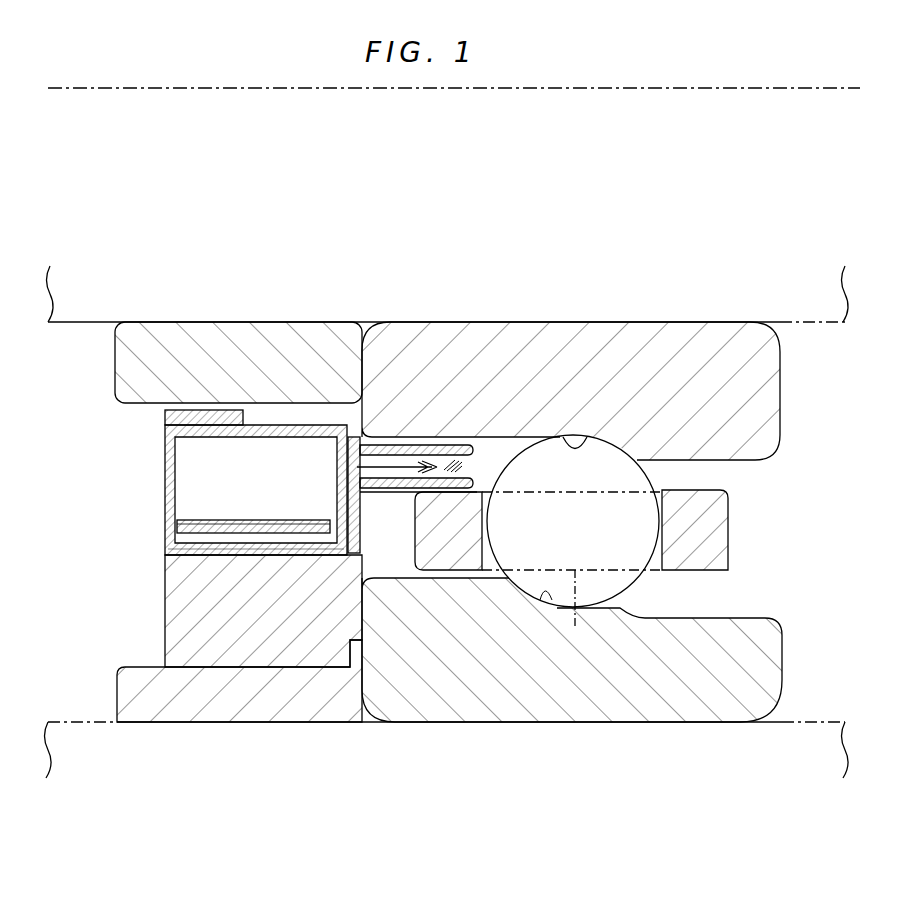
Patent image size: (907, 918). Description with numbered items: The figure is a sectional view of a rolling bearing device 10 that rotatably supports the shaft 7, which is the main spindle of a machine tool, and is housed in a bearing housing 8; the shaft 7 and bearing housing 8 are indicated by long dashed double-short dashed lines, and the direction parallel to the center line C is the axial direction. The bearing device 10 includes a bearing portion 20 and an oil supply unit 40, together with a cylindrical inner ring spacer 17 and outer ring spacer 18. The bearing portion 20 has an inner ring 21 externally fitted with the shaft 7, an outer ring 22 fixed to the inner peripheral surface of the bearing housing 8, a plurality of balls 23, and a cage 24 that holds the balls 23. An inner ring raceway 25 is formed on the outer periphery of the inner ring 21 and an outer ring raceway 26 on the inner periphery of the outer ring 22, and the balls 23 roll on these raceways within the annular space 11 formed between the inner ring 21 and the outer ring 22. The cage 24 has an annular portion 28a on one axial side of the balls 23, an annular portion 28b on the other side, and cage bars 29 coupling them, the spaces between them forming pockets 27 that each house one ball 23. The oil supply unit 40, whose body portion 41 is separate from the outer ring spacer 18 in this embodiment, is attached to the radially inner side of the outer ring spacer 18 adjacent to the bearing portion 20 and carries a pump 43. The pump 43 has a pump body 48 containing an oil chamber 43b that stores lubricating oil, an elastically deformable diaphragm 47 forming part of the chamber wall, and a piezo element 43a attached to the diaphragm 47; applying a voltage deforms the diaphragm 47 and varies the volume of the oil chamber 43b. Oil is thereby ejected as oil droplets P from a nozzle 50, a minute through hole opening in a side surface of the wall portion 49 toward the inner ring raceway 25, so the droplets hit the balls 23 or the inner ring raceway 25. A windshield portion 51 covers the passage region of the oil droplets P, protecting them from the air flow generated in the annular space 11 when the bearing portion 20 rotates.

The center line C is at (135, 92).
The shaft 7 is at (77, 324).
The bearing housing 8 is at (77, 721).
The rolling bearing device 10 is at (631, 547).
The annular space 11 is at (402, 565).
The inner ring spacer 17 is at (163, 340).
The outer ring spacer 18 is at (163, 702).
The bearing portion 20 is at (609, 696).
The inner ring 21 is at (781, 398).
The outer ring 22 is at (772, 683).
The balls 23 is at (559, 606).
The cage 24 is at (626, 629).
The inner ring raceway 25 is at (568, 434).
The outer ring raceway 26 is at (541, 600).
The pockets 27 is at (620, 492).
The annular portion 28a is at (457, 548).
The annular portion 28b is at (720, 546).
The cage bars 29 is at (575, 627).
The oil supply unit 40 is at (208, 589).
The body portion 41 is at (182, 620).
The pump 43 is at (207, 506).
The piezo element 43a is at (165, 544).
The oil chamber 43b is at (273, 497).
The diaphragm 47 is at (185, 545).
The pump body 48 is at (165, 445).
The wall portion 49 is at (338, 493).
The nozzle 50 is at (376, 377).
The windshield portion 51 is at (450, 444).
The oil droplets P is at (458, 442).